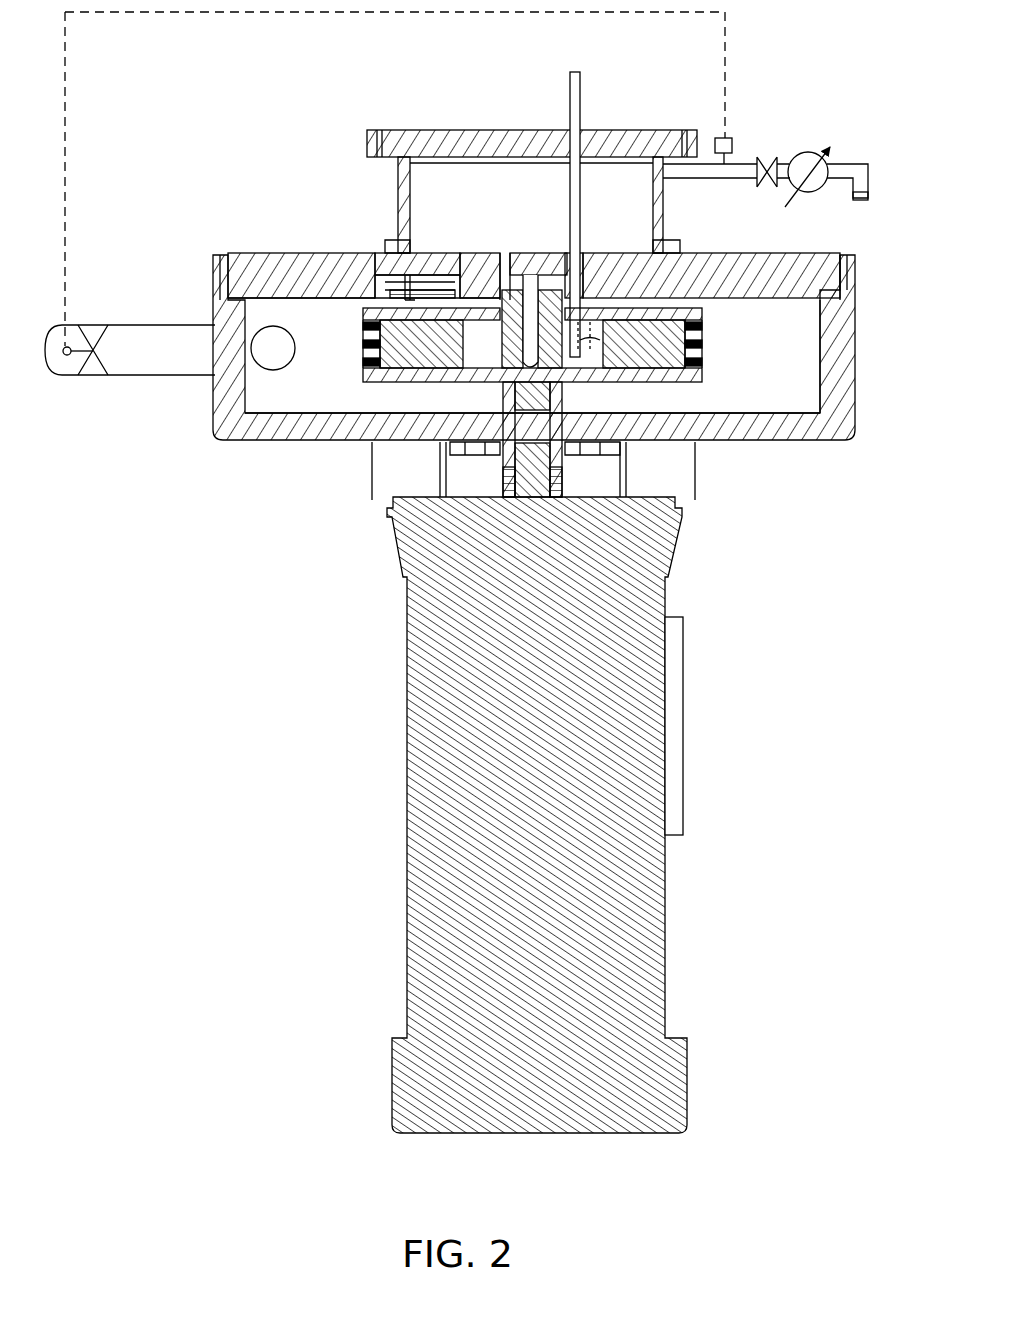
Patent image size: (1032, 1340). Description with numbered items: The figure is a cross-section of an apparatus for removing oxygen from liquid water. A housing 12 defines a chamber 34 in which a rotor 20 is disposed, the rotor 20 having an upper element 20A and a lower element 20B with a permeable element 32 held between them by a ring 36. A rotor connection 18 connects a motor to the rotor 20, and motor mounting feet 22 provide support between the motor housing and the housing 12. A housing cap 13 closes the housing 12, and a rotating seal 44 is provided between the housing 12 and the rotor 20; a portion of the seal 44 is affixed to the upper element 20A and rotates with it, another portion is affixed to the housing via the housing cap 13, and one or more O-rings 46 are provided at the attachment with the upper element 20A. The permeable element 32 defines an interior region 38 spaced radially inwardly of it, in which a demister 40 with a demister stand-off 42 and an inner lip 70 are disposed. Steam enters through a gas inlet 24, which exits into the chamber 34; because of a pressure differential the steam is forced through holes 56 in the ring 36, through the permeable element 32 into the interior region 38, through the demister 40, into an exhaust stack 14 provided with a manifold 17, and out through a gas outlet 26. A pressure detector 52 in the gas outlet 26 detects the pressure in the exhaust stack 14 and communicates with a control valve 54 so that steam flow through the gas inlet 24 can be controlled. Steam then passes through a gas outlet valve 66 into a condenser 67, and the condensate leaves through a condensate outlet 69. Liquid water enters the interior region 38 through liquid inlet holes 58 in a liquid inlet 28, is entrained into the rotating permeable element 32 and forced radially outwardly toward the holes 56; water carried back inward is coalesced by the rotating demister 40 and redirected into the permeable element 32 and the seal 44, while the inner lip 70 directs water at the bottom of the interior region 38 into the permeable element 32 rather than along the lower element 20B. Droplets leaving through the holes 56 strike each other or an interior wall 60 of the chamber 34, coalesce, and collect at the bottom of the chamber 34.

The housing 12 is at (213, 408).
The housing cap 13 is at (855, 270).
The exhaust stack 14 is at (665, 216).
The manifold 17 is at (607, 122).
The rotor connection 18 is at (565, 462).
The rotor 20 is at (553, 350).
The upper element 20A is at (770, 248).
The lower element 20B is at (690, 383).
The motor mounting feet 22 is at (640, 478).
The gas inlet 24 is at (275, 370).
The gas outlet 26 is at (743, 178).
The liquid inlet 28 is at (568, 90).
The permeable element 32 is at (388, 385).
The chamber 34 is at (808, 370).
The ring 36 is at (700, 343).
The interior region 38 is at (487, 310).
The demister 40 is at (470, 344).
The demister stand-off 42 is at (545, 290).
The rotating seal 44 is at (392, 290).
The O-rings 46 is at (415, 298).
The pressure detector 52 is at (732, 143).
The control valve 54 is at (92, 388).
The holes 56 is at (362, 360).
The liquid inlet holes 58 is at (596, 338).
The interior wall 60 is at (826, 395).
The gas outlet valve 66 is at (773, 153).
The condenser 67 is at (832, 150).
The condensate outlet 69 is at (862, 203).
The inner lip 70 is at (433, 383).